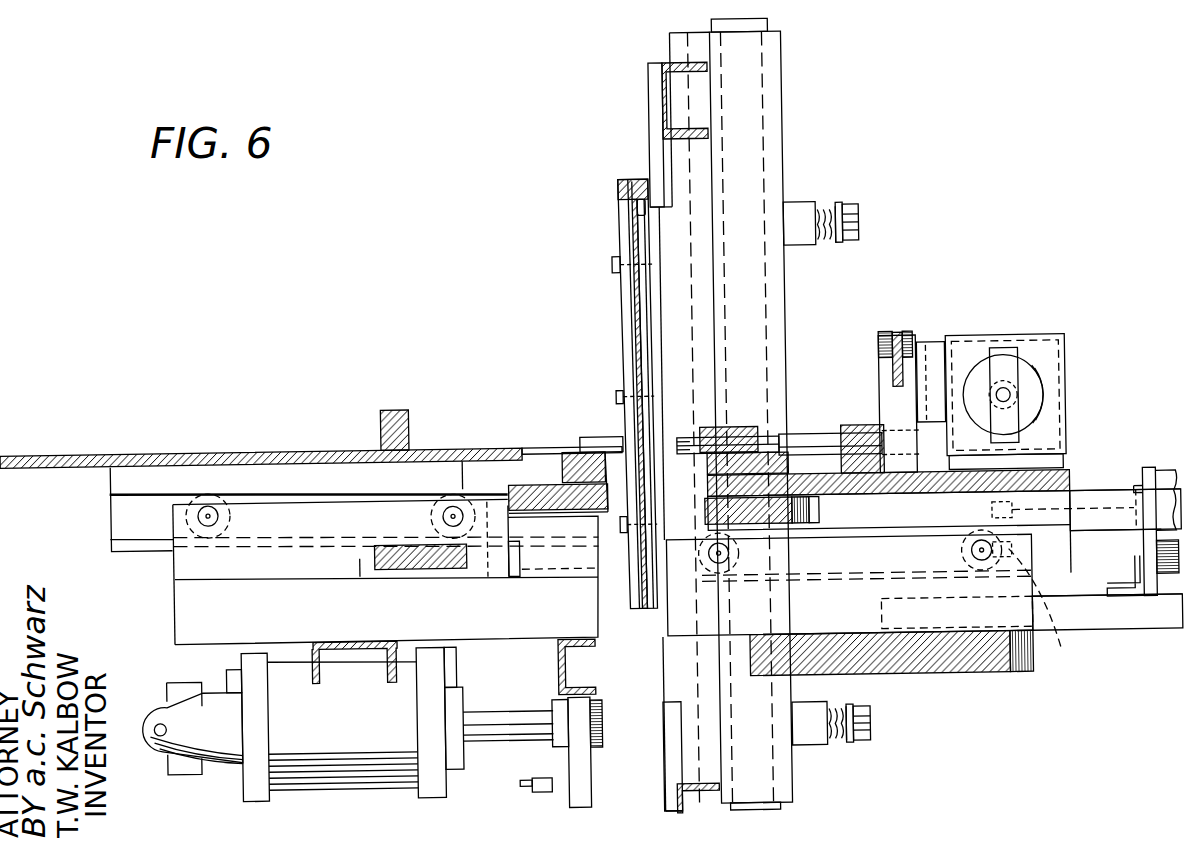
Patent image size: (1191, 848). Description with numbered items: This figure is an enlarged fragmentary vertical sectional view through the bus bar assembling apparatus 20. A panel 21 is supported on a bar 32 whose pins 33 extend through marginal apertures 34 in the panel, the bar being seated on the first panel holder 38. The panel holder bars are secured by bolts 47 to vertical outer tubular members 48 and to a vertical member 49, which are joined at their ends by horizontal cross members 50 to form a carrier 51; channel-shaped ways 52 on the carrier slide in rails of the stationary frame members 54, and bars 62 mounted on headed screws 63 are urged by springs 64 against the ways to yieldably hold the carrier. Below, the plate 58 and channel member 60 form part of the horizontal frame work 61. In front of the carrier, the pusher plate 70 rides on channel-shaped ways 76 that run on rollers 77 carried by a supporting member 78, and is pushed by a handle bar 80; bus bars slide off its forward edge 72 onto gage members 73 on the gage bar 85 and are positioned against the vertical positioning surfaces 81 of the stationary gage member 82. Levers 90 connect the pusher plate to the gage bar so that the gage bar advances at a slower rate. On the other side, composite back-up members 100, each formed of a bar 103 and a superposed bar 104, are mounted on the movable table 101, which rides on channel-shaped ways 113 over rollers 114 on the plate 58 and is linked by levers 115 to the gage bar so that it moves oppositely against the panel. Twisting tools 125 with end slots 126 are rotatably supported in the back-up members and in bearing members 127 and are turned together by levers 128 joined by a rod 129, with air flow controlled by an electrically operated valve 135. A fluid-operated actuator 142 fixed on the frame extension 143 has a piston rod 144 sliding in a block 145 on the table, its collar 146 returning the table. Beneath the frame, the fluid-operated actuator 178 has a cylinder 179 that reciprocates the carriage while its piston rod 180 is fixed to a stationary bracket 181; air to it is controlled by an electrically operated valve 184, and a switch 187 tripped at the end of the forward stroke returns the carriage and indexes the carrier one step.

The apparatus 20 is at (828, 103).
The panel 21 is at (638, 319).
The bar 32 is at (625, 180).
The pins 33 is at (639, 182).
The marginal apertures 34 is at (649, 208).
The first panel holder 38 is at (611, 352).
The bolts 47 is at (614, 262).
The vertical outer tubular members 48 is at (656, 110).
The vertical member 49 is at (675, 303).
The horizontal cross members 50 is at (668, 80).
The carrier 51 is at (654, 62).
The channel-shaped ways 52 is at (773, 146).
The stationary frame members 54 is at (760, 27).
The plate 58 is at (950, 665).
The channel member 60 is at (345, 640).
The frame work 61 is at (170, 598).
The bars 62 is at (800, 210).
The headed screws 63 is at (830, 212).
The springs 64 is at (860, 225).
The pusher plate 70 is at (150, 447).
The forward edge 72 is at (578, 448).
The gage members 73 is at (575, 465).
The channel-shaped ways 76 is at (125, 490).
The rollers 77 is at (184, 508).
The supporting member 78 is at (185, 558).
The handle bar 80 is at (392, 425).
The vertical positioning surfaces 81 is at (575, 445).
The stationary gage member 82 is at (596, 437).
The gage bar 85 is at (550, 495).
The levers 90 is at (415, 566).
The composite back-up members 100 is at (740, 425).
The movable table 101 is at (965, 492).
The bar 103 is at (770, 468).
The bar 104 is at (758, 440).
The channel-shaped ways 113 is at (1055, 512).
The rollers 114 is at (955, 558).
The levers 115 is at (748, 512).
The twisting tools 125 is at (800, 438).
The slots 126 is at (690, 420).
The bearing members 127 is at (858, 428).
The levers 128 is at (880, 372).
The rod 129 is at (900, 340).
The electrically operated valve 135 is at (1032, 385).
The fluid-operated actuator 142 is at (1150, 478).
The extension 143 is at (1118, 638).
The piston rod 144 is at (1095, 540).
The block 145 is at (1108, 604).
The collar 146 is at (1058, 655).
The fluid-operated actuator 178 is at (235, 785).
The cylinder 179 is at (330, 770).
The piston rod 180 is at (500, 710).
The stationary bracket 181 is at (566, 756).
The electrically operated valve 184 is at (170, 712).
The switch 187 is at (530, 790).